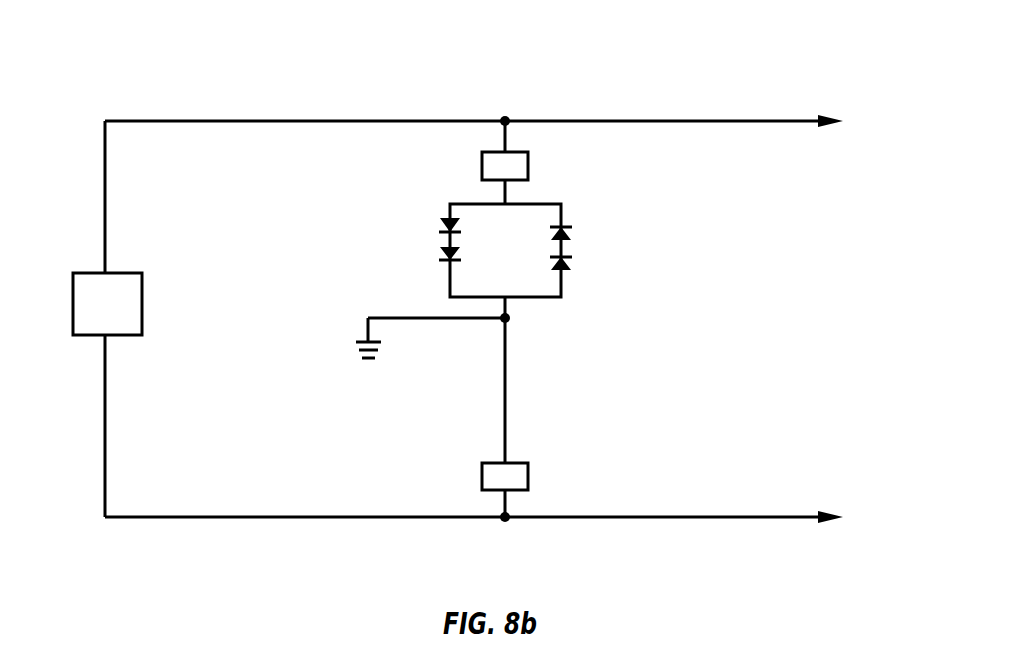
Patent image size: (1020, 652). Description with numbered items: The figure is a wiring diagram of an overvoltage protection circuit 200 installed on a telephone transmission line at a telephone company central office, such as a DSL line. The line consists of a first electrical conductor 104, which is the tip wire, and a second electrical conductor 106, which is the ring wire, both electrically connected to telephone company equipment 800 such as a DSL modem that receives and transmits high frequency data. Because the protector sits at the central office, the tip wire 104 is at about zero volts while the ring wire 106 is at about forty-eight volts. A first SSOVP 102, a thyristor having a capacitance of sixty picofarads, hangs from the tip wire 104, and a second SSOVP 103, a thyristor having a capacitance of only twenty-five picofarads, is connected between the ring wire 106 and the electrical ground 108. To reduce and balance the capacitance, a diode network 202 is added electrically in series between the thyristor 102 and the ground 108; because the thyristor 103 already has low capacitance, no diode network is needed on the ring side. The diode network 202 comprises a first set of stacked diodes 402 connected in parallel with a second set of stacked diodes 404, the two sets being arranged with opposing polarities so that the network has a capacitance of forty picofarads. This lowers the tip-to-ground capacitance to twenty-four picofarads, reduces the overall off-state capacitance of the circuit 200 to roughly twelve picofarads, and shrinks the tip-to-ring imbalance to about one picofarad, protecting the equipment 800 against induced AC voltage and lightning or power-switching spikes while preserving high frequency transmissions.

The overvoltage protection circuit 200 is at (642, 77).
The first electrical conductor 104 is at (163, 121).
The second electrical conductor 106 is at (218, 517).
The telephone company equipment 800 is at (73, 298).
The first SSOVP 102 is at (528, 167).
The second SSOVP 103 is at (528, 480).
The diode network 202 is at (563, 283).
The first set of stacked diodes 402 is at (448, 221).
The second set of stacked diodes 404 is at (565, 232).
The electrical ground 108 is at (362, 341).